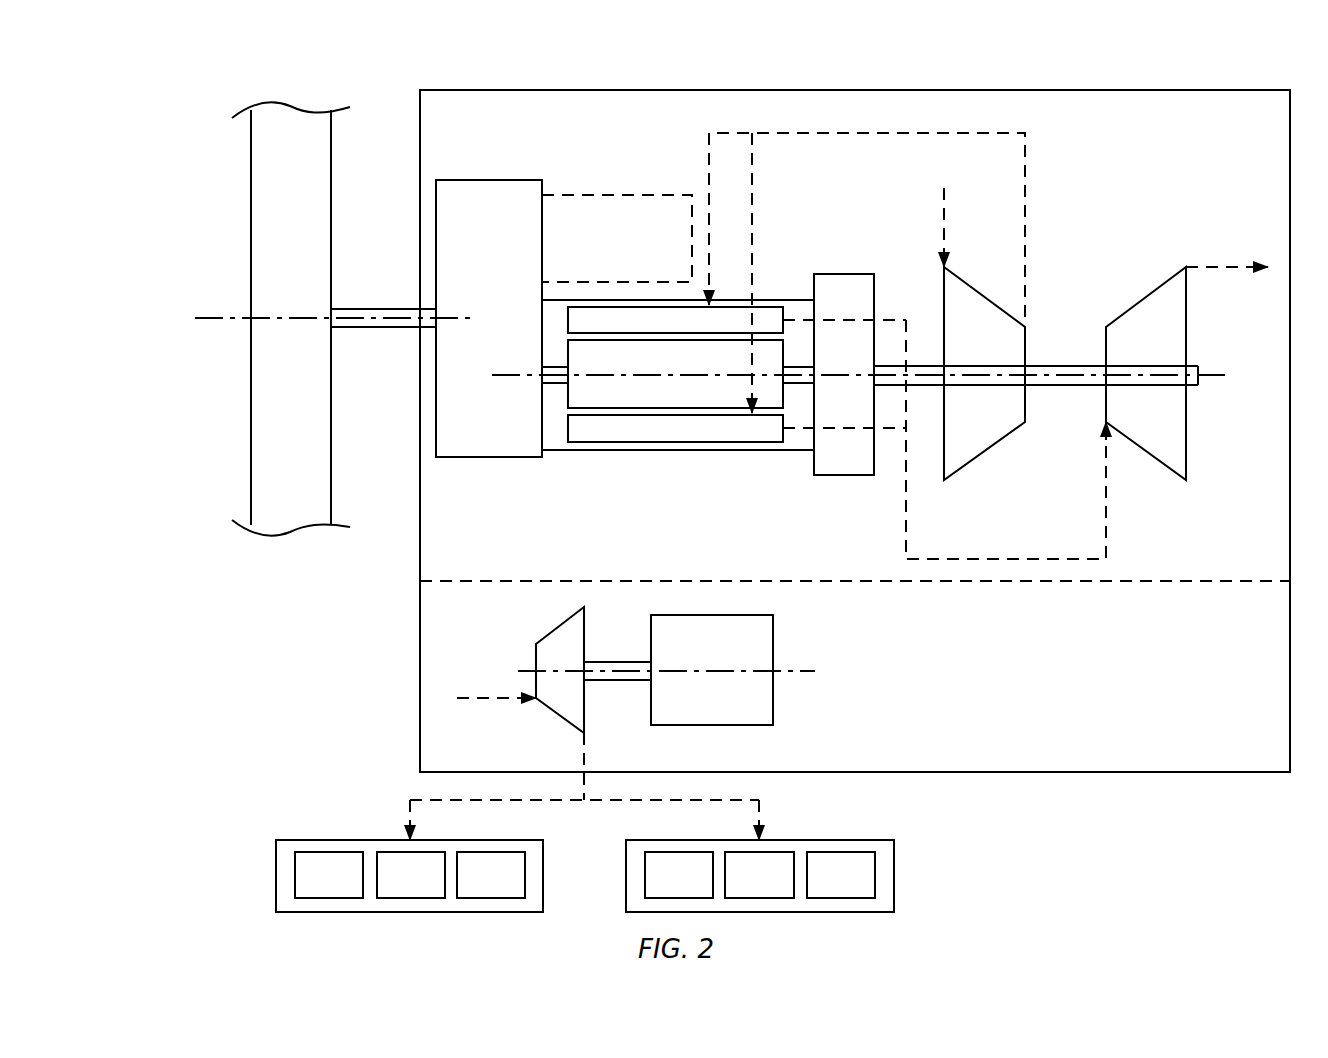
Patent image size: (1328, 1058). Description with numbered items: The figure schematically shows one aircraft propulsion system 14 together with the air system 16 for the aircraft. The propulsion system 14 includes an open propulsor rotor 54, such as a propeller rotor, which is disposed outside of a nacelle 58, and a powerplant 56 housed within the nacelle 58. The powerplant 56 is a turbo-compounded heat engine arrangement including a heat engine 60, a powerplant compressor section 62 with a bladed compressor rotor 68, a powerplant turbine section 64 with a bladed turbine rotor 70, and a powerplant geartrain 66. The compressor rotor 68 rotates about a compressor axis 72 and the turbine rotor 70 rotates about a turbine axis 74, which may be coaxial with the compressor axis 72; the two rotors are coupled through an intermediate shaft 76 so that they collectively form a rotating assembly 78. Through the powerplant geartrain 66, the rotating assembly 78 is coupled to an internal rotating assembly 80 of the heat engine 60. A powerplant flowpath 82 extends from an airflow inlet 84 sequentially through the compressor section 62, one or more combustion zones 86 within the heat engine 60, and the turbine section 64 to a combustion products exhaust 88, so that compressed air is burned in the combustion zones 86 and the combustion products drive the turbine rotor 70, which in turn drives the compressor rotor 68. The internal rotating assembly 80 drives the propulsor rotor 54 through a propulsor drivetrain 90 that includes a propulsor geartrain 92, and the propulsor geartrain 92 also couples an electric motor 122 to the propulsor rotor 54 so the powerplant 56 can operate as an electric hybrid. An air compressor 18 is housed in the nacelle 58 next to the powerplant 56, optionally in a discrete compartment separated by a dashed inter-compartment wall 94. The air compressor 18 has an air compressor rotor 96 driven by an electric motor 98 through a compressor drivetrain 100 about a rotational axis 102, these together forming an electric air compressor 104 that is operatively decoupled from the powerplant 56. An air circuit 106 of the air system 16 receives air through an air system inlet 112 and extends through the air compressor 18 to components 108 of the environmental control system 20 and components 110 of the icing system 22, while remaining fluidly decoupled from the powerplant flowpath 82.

The aircraft propulsion system 14 is at (160, 120).
The air system 16 is at (338, 762).
The air compressor 18 is at (527, 635).
The environmental control system 20 is at (268, 865).
The icing system 22 is at (905, 865).
The propulsor rotor 54 is at (238, 172).
The powerplant 56 is at (1138, 130).
The nacelle 58 is at (1230, 90).
The heat engine 60 is at (594, 460).
The powerplant compressor section 62 is at (980, 470).
The powerplant turbine section 64 is at (1160, 485).
The powerplant geartrain 66 is at (838, 483).
The compressor rotor 68 is at (1003, 437).
The turbine rotor 70 is at (1186, 437).
The compressor axis 72 is at (1010, 378).
The turbine axis 74 is at (1160, 378).
The intermediate shaft 76 is at (1070, 363).
The rotating assembly 78 is at (1198, 352).
The internal rotating assembly 80 is at (675, 412).
The powerplant flowpath 82 is at (1025, 188).
The airflow inlet 84 is at (944, 188).
The combustion zones 86 is at (770, 315).
The combustion products exhaust 88 is at (1262, 267).
The propulsor drivetrain 90 is at (470, 468).
The propulsor geartrain 92 is at (489, 318).
The inter-compartment wall 94 is at (1233, 583).
The air compressor rotor 96 is at (562, 622).
The electric motor 98 is at (712, 670).
The compressor drivetrain 100 is at (616, 650).
The rotational axis 102 is at (808, 672).
The electric air compressor 104 is at (784, 622).
The air circuit 106 is at (584, 757).
The environmental control system components 108 is at (410, 875).
The icing system components 110 is at (760, 875).
The air system inlet 112 is at (457, 698).
The electric motor 122 is at (617, 238).